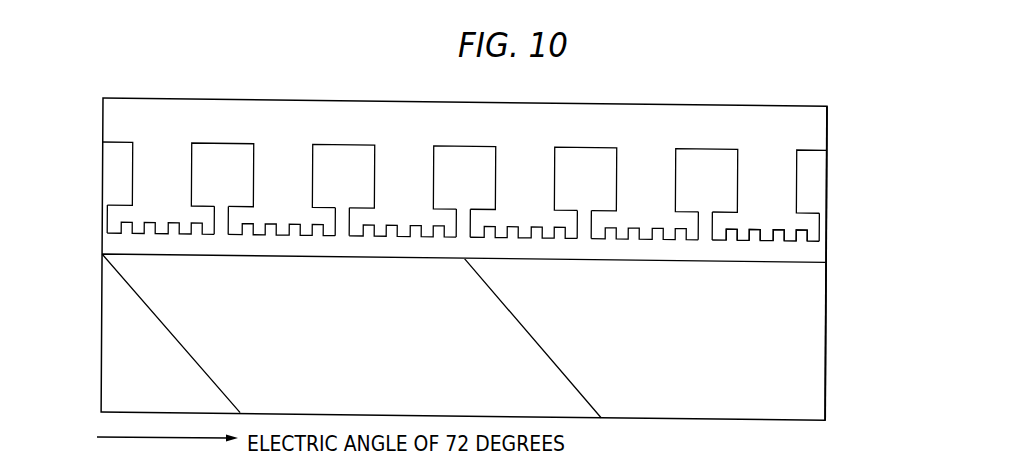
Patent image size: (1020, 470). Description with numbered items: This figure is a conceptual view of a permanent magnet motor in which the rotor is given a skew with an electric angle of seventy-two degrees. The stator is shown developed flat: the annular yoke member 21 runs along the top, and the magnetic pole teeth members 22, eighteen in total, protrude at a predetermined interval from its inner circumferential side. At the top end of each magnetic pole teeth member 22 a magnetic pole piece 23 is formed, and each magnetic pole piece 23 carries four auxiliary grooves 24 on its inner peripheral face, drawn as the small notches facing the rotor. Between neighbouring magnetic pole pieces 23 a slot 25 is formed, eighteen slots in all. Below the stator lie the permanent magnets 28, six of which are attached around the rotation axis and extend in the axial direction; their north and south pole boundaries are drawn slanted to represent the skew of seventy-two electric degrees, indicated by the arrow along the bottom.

The annular yoke member 21 is at (803, 125).
The magnetic pole teeth members 22 is at (785, 182).
The magnetic pole pieces 23 is at (812, 225).
The auxiliary grooves 24 is at (800, 242).
The slot 25 is at (705, 237).
The permanent magnets 28 is at (800, 376).